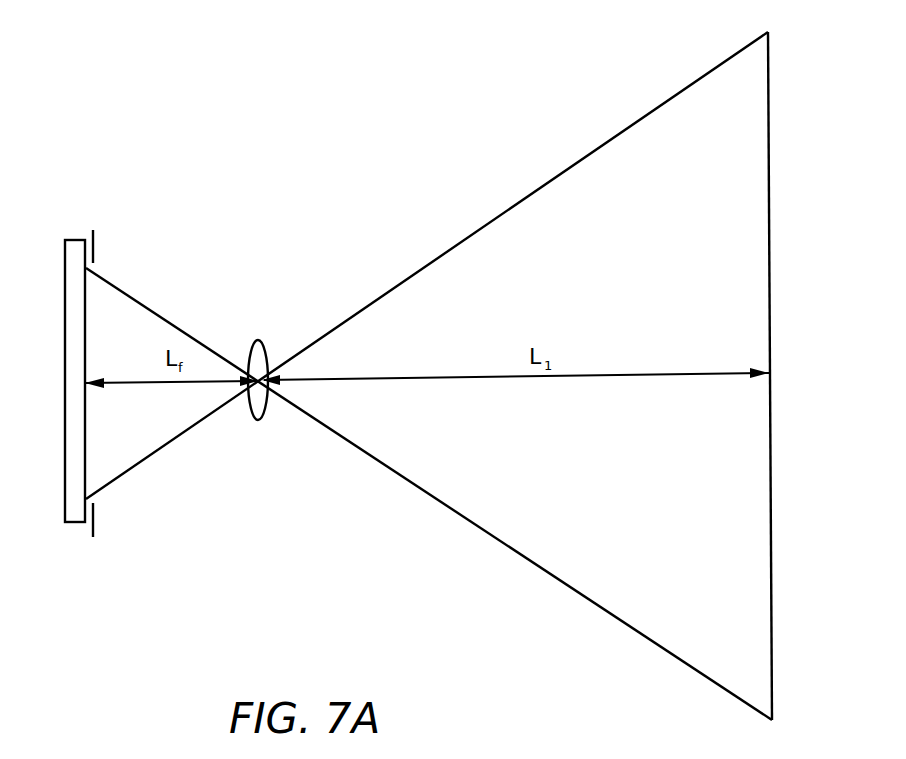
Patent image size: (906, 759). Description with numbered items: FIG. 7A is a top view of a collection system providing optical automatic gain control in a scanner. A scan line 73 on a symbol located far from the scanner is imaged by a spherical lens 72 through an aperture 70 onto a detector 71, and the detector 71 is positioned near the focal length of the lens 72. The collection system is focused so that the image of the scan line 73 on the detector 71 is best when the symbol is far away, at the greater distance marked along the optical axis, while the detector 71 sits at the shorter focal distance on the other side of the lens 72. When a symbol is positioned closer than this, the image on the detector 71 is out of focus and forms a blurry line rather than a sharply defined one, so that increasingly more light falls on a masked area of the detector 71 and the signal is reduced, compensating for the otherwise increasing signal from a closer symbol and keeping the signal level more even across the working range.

The aperture 70 is at (97, 241).
The detector 71 is at (65, 288).
The spherical lens 72 is at (272, 352).
The scan line 73 is at (770, 90).